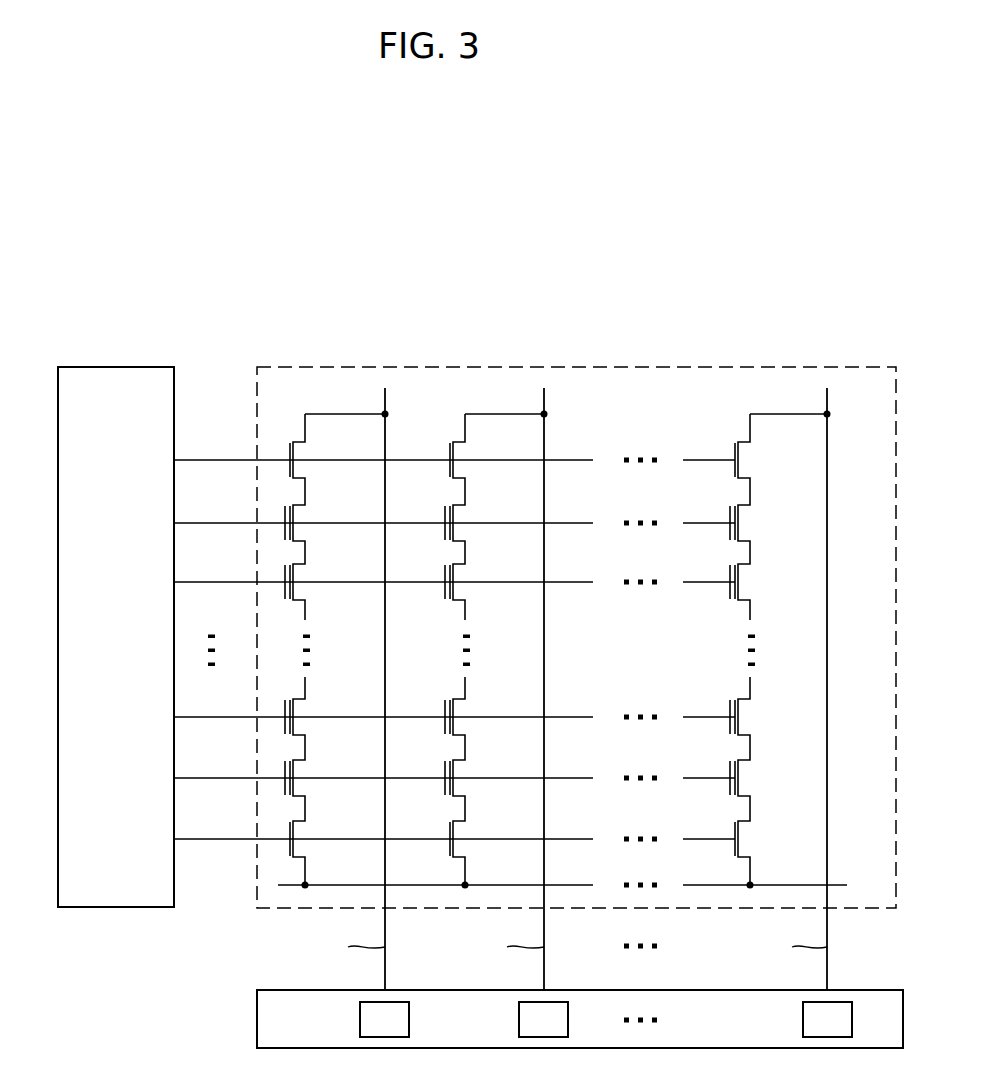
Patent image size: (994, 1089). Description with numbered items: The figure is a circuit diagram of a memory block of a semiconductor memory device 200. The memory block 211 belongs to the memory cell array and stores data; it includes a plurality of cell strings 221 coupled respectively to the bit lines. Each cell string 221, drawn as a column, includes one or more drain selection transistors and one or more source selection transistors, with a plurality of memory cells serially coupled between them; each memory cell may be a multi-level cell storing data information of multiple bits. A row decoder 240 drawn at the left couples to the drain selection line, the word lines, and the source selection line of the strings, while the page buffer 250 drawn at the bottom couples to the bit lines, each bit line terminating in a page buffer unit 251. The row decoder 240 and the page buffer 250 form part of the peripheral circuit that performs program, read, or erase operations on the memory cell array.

The semiconductor memory device 200 is at (871, 272).
The memory block 211 is at (790, 367).
The cell string 221 is at (292, 407).
The row decoder 240 is at (115, 367).
The page buffer 250 is at (257, 1018).
The page buffer 251 is at (360, 1018).